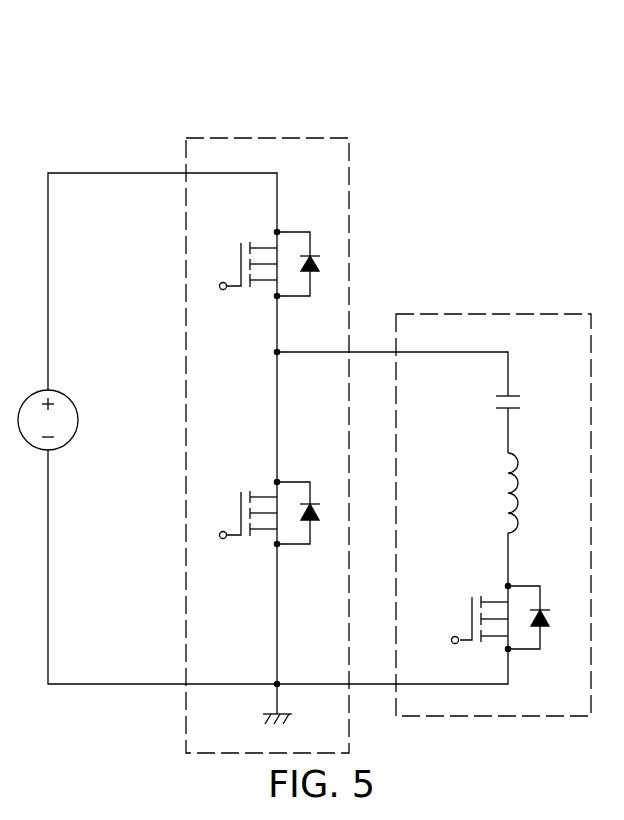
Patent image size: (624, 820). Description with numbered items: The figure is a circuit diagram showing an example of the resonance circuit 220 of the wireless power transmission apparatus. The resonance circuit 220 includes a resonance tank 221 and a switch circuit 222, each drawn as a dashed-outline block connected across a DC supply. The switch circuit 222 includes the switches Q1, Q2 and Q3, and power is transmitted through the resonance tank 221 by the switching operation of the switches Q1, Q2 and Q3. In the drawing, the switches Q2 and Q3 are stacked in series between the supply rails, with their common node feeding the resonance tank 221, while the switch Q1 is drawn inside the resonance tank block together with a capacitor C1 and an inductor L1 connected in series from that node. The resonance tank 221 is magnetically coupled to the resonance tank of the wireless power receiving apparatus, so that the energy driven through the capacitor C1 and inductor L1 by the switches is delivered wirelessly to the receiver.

The resonance circuit 220 is at (281, 36).
The resonance tank 221 is at (265, 138).
The switch circuit 222 is at (493, 314).
The switch Q1 is at (501, 606).
The switch Q2 is at (270, 252).
The switch Q3 is at (270, 501).
The resonant capacitor C1 is at (525, 421).
The resonant inductor L1 is at (528, 519).